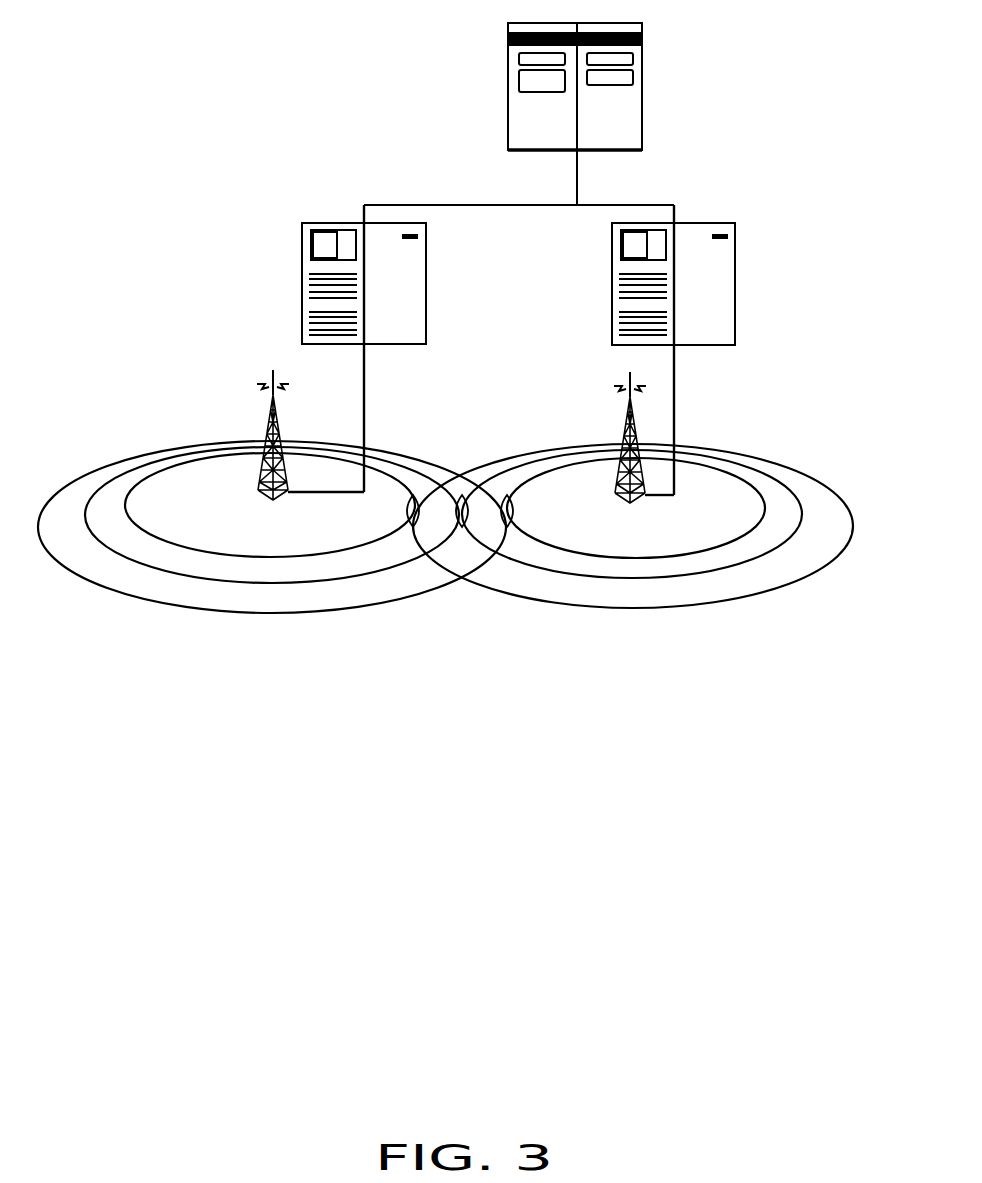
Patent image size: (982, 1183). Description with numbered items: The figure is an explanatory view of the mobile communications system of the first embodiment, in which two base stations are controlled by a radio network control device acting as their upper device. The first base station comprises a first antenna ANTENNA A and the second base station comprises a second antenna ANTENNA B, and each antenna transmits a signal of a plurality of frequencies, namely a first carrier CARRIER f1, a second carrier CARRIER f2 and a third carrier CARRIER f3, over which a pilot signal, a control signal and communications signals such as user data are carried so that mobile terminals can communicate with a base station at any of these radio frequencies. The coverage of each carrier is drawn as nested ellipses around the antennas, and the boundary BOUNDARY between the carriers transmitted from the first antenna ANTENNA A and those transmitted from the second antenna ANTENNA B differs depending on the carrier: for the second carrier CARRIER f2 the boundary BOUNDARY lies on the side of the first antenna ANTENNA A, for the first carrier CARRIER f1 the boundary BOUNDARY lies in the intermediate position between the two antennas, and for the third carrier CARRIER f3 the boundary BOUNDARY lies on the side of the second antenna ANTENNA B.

The antenna A ANTENNA A is at (253, 435).
The antenna B ANTENNA B is at (586, 437).
The boundary BOUNDARY is at (507, 495).
The carrier f1 CARRIER f1 is at (560, 584).
The carrier f2 CARRIER f2 is at (383, 557).
The carrier f3 CARRIER f3 is at (539, 559).